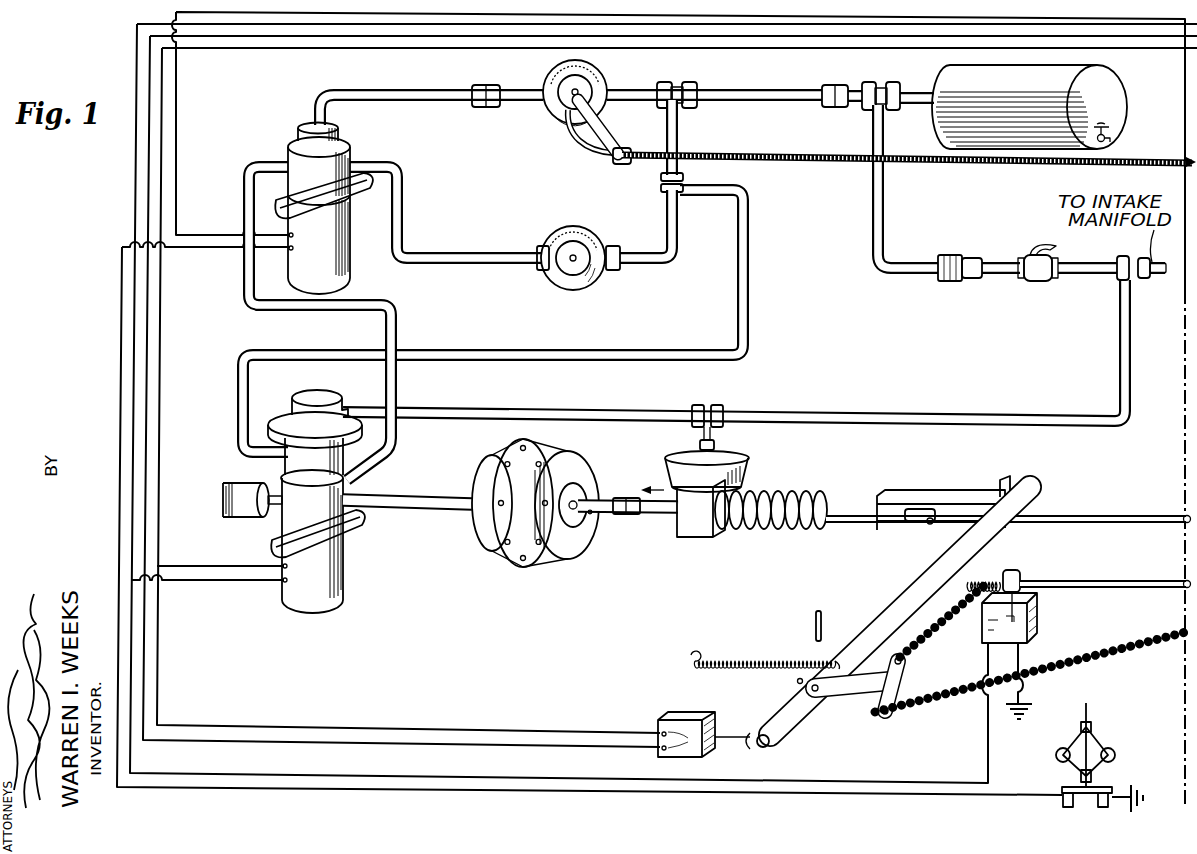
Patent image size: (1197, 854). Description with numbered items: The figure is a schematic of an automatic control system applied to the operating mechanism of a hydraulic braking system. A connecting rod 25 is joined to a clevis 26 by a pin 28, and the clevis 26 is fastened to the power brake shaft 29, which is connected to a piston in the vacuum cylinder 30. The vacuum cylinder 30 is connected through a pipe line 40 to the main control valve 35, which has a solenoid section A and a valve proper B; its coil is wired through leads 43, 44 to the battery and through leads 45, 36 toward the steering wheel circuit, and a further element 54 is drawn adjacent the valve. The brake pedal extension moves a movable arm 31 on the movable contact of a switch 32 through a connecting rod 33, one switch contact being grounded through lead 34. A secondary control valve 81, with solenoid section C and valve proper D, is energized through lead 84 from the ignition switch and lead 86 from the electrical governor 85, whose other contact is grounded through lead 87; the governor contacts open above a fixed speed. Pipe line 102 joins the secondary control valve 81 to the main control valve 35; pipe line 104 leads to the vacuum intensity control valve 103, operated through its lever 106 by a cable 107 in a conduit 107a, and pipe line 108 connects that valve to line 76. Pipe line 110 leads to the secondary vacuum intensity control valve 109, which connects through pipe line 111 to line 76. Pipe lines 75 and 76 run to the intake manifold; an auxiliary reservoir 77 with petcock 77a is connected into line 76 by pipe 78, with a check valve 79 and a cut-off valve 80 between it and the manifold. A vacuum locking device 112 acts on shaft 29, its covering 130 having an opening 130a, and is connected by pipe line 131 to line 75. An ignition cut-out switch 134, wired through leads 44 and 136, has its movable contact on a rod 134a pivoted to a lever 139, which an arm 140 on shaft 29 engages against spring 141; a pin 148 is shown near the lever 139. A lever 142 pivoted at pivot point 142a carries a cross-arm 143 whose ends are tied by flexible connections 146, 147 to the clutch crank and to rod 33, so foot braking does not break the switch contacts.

The connecting rod 25 is at (1145, 515).
The clevis 26 is at (905, 523).
The pin 28 is at (930, 526).
The power brake shaft 29 is at (628, 514).
The vacuum cylinder 30 is at (576, 465).
The movable arm 31 is at (1010, 570).
The switch 32 is at (1040, 615).
The connecting rod 33 is at (1147, 583).
The lead 34 is at (1028, 644).
The main control valve 35 is at (349, 534).
The lead 36 is at (243, 26).
The pipe line 40 is at (411, 500).
The lead 43 is at (214, 566).
The lead 44 is at (283, 38).
The lead 45 is at (214, 581).
The solenoid 54 is at (225, 490).
The pipe line 75 is at (650, 410).
The pipe line 76 is at (763, 97).
The auxiliary reservoir 77 is at (949, 76).
The petcock 77a is at (1112, 136).
The pipe 78 is at (917, 106).
The check valve 79 is at (958, 256).
The valve 80 is at (1040, 283).
The secondary control valve 81 is at (348, 202).
The lead 84 is at (331, 38).
The electrical governor 85 is at (1095, 780).
The lead 86 is at (205, 250).
The lead 87 is at (1117, 797).
The pipe line 102 is at (241, 175).
The vacuum intensity control valve 103 is at (548, 116).
The pipe line 104 is at (403, 101).
The lever 106 is at (563, 132).
The cable 107 is at (590, 152).
The conduit 107a is at (830, 163).
The pipe line 108 is at (645, 90).
The secondary vacuum intensity control valve 109 is at (548, 280).
The pipe line 110 is at (403, 200).
The pipe line 111 is at (680, 238).
The vacuum locking device 112 is at (703, 526).
The covering 130 is at (620, 497).
The opening 130a is at (591, 516).
The pipe line 131 is at (718, 437).
The switch 134 is at (685, 716).
The rod 134a is at (736, 732).
The lead 136 is at (406, 49).
The lever 139 is at (1034, 484).
The arm 140 is at (910, 491).
The spring 141 is at (745, 660).
The lever 142 is at (847, 697).
The pivot point 142a is at (797, 682).
The cross-arm 143 is at (906, 673).
The flexible connection 146 is at (1094, 674).
The flexible connection 147 is at (932, 632).
The pin 148 is at (828, 616).
The solenoid section A is at (346, 594).
The valve proper B is at (304, 509).
The solenoid section C is at (349, 265).
The valve proper D is at (352, 149).